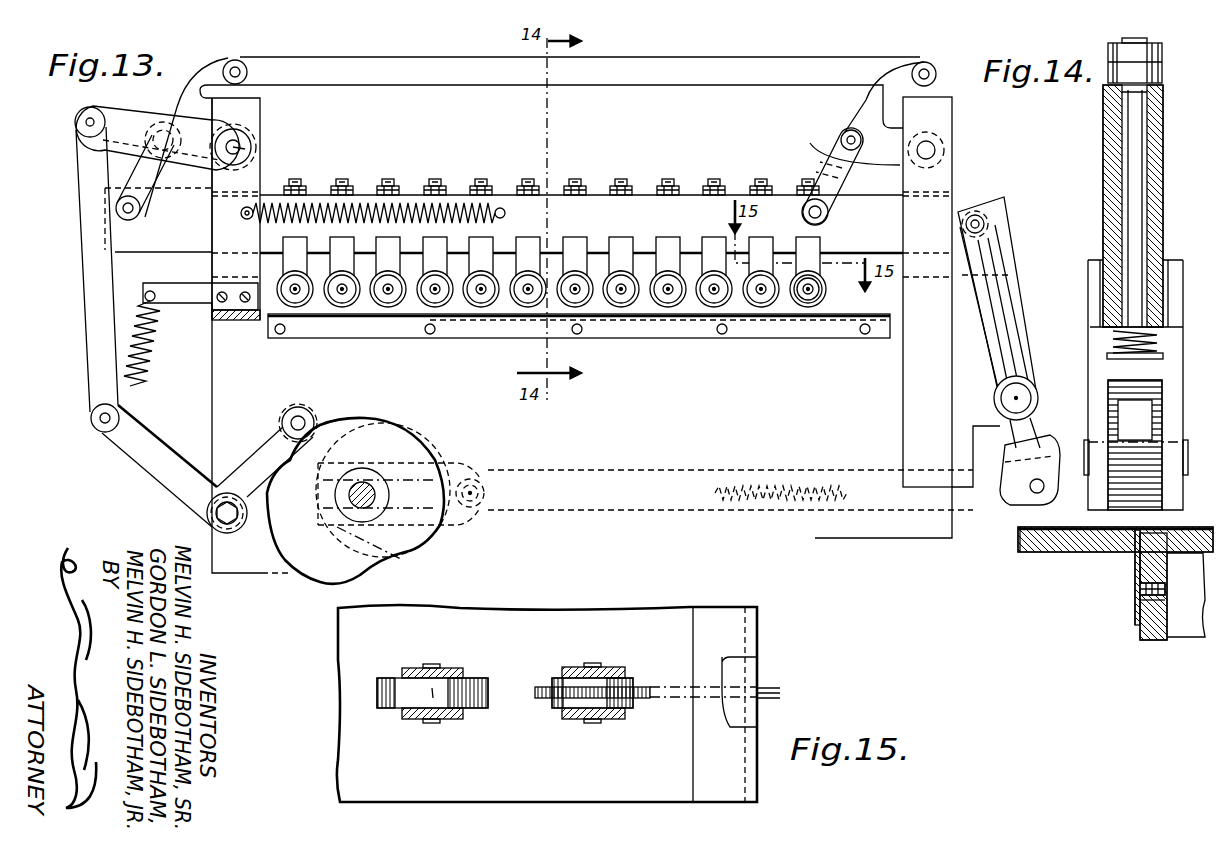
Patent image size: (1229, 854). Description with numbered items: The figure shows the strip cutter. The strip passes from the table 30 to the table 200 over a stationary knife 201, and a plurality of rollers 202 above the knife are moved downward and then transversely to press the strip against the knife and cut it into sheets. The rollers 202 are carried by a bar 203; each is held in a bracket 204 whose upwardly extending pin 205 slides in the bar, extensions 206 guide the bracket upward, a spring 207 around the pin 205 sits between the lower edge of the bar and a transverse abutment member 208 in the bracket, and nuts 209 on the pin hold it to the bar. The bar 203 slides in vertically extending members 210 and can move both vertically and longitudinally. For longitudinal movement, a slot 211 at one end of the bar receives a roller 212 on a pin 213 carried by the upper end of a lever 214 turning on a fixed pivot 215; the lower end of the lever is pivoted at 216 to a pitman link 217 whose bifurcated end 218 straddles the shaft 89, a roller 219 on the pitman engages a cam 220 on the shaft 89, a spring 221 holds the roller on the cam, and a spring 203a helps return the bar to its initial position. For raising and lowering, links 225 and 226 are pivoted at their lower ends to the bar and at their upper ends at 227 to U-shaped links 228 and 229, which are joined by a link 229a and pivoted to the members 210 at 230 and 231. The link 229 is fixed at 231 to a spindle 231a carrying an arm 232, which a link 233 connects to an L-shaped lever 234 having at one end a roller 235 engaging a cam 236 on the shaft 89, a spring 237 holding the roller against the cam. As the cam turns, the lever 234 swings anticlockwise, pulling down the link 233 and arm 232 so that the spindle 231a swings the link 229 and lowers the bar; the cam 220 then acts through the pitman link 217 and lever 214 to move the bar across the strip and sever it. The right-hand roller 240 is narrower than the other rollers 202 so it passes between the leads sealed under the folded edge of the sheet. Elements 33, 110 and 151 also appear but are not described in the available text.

In FIG. 13, the U-shaped link 229 is at (212, 66).
In FIG. 13, the link 229a is at (684, 68).
In FIG. 13, the U-shaped link 228 is at (888, 74).
In FIG. 13, the vertically extending member 210 is at (264, 182).
In FIG. 13, the pivot 231 is at (245, 146).
In FIG. 13, the spindle 231a is at (247, 150).
In FIG. 13, the arm 232 is at (122, 130).
In FIG. 13, the pivot 227 is at (156, 128).
In FIG. 13, the link 226 is at (145, 183).
In FIG. 13, the link 233 is at (90, 283).
In FIG. 13, the spring 237 is at (140, 367).
In FIG. 13, the L-shaped lever 234 is at (137, 447).
In FIG. 13, the cam 236 is at (293, 537).
In FIG. 13, the roller 235 is at (306, 410).
In FIG. 13, the shaft 89 is at (364, 492).
In FIG. 13, the bifurcated end 218 is at (420, 440).
In FIG. 13, the roller 219 is at (488, 472).
In FIG. 13, the cam 220 is at (445, 530).
In FIG. 13, the pitman link 217 is at (684, 470).
In FIG. 13, the spring 221 is at (782, 470).
In FIG. 13, the bar 203 is at (633, 207).
In FIG. 14, the bar 203 is at (1165, 133).
In FIG. 13, the spring 203a is at (397, 207).
In FIG. 13, the nut 209 is at (518, 186).
In FIG. 14, the nut 209 is at (1160, 72).
In FIG. 13, the bracket 204 is at (612, 236).
In FIG. 14, the bracket 204 is at (1092, 348).
In FIG. 15, the bracket 204 is at (420, 655).
In FIG. 13, the roller 202 is at (700, 297).
In FIG. 14, the roller 202 is at (1108, 520).
In FIG. 15, the roller 202 is at (490, 678).
In FIG. 13, the plate 33 is at (768, 318).
In FIG. 14, the plate 33 is at (1088, 528).
In FIG. 15, the plate 33 is at (438, 627).
In FIG. 13, the roller 240 is at (806, 307).
In FIG. 15, the roller 240 is at (572, 687).
In FIG. 13, the link 225 is at (828, 148).
In FIG. 13, the pivot 230 is at (928, 150).
In FIG. 13, the slot 211 is at (975, 205).
In FIG. 13, the roller 212 is at (1005, 197).
In FIG. 13, the pin 213 is at (982, 226).
In FIG. 13, the lever 214 is at (1008, 308).
In FIG. 13, the fixed pivot 215 is at (1020, 402).
In FIG. 13, the pivot 216 is at (1030, 490).
In FIG. 14, the pin 205 is at (1135, 213).
In FIG. 14, the extension 206 is at (1175, 262).
In FIG. 14, the spring 207 is at (1165, 338).
In FIG. 14, the transverse abutment member 208 is at (1160, 362).
In FIG. 14, the table 200 is at (1053, 540).
In FIG. 14, the table 30 is at (1170, 585).
In FIG. 14, the stationary knife 201 is at (1135, 587).
In FIG. 15, the stationary knife 201 is at (764, 690).
In FIG. 14, the pin 151 is at (1123, 620).
In FIG. 15, the bar 110 is at (712, 622).